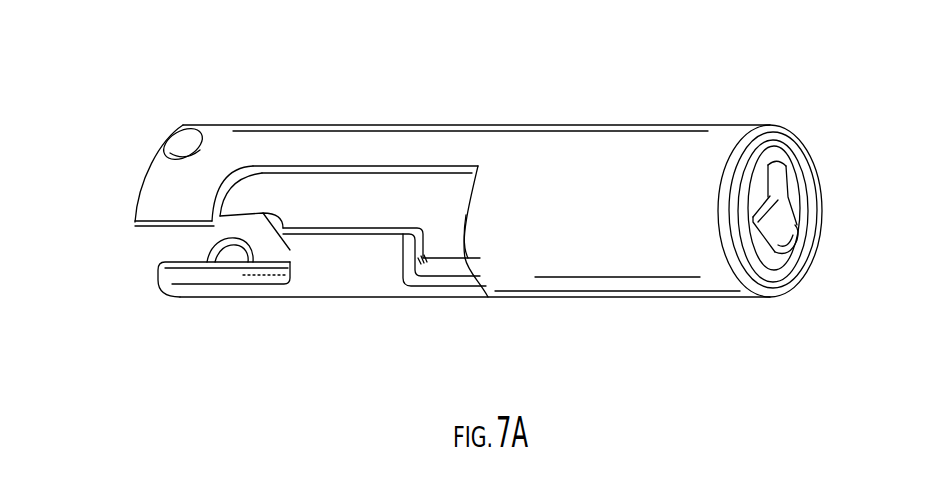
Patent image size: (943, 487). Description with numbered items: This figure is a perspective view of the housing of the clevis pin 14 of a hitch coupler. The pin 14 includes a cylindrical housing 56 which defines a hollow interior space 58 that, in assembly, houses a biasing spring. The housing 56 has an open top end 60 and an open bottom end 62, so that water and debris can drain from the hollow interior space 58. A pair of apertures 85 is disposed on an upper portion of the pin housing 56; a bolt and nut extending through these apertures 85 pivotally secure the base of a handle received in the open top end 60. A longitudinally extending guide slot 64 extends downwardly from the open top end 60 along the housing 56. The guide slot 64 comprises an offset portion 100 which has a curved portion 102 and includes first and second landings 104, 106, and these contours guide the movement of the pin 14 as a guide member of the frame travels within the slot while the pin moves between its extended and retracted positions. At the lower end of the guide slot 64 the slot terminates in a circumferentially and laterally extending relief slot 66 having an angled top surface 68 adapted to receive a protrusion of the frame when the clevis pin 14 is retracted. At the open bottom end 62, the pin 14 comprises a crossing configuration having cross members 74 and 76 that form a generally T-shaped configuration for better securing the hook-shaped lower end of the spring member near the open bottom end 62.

The clevis pin 14 is at (659, 118).
The cylindrical housing 56 is at (557, 172).
The hollow interior space 58 is at (431, 207).
The open top end 60 is at (120, 238).
The open bottom end 62 is at (795, 257).
The guide slot 64 is at (220, 222).
The relief slot 66 is at (448, 243).
The angled top surface 68 is at (404, 237).
The cross member 74 is at (795, 185).
The cross member 76 is at (765, 172).
The apertures 85 is at (185, 145).
The offset portion 100 is at (354, 158).
The curved portion 102 is at (258, 195).
The first landing 104 is at (280, 232).
The second landing 106 is at (469, 248).